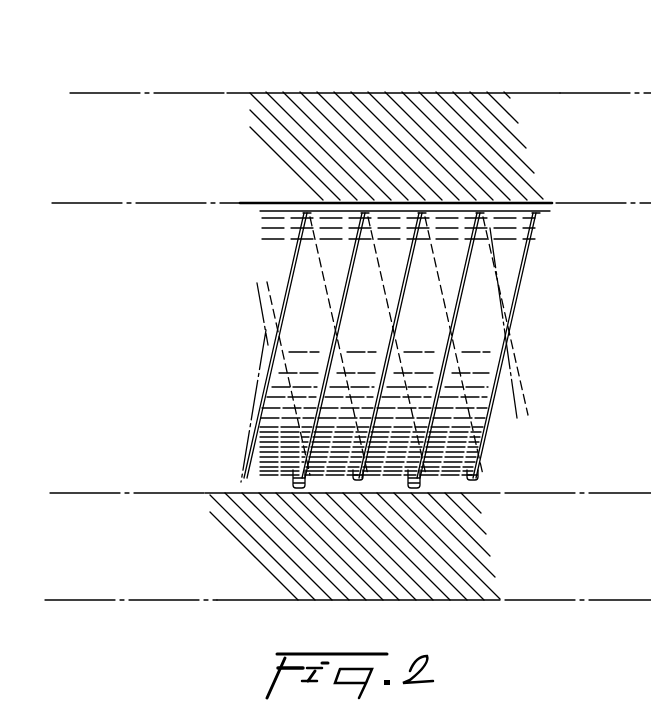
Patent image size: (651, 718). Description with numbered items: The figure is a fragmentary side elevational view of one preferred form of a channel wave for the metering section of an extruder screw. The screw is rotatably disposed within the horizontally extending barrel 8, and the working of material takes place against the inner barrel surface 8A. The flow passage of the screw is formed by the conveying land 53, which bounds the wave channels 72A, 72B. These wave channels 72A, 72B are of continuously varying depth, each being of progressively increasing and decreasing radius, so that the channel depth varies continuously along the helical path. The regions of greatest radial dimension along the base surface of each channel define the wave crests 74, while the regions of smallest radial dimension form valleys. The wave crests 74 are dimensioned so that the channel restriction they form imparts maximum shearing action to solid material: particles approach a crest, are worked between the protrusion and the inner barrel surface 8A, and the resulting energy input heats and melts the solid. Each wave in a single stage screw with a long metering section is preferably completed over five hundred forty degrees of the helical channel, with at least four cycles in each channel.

The barrel 8 is at (343, 93).
The inner barrel surface 8A is at (269, 204).
The wave channel 72A is at (384, 196).
The wave channel 72B is at (446, 235).
The wave crests 74 is at (402, 222).
The conveying land 53 is at (302, 491).